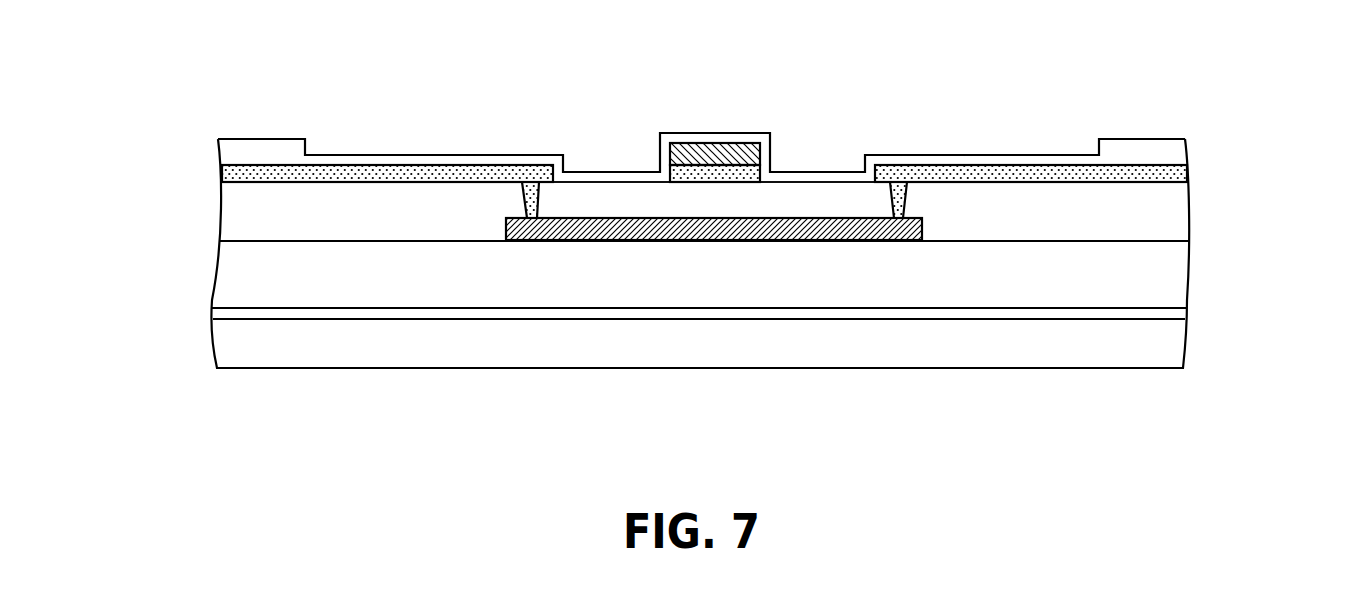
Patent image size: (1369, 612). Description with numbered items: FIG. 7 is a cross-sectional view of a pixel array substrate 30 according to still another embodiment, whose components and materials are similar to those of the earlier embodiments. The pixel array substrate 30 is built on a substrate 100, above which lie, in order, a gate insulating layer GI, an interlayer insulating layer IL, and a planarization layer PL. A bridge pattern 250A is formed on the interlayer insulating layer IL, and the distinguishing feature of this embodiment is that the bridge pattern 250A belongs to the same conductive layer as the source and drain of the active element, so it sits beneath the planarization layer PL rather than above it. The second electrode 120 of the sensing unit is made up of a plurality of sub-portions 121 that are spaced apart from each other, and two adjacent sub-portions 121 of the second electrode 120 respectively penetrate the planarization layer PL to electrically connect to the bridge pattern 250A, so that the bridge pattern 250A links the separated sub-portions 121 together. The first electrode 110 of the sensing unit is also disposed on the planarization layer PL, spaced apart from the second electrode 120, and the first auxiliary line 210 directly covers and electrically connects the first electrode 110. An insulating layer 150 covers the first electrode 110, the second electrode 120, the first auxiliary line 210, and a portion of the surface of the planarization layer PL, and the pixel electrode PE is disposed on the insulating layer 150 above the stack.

The substrate 100 is at (1172, 345).
The gate insulating layer GI is at (1172, 313).
The interlayer insulating layer IL is at (1170, 277).
The planarization layer PL is at (1180, 215).
The bridge pattern 250A is at (627, 232).
The second electrode 120 is at (1243, 188).
The sub-portion 121 is at (440, 173).
The insulating layer 150 is at (1178, 163).
The first electrode 110 is at (745, 175).
The first auxiliary line 210 is at (720, 152).
The pixel electrode PE is at (1177, 148).
The pixel array substrate 30 is at (1210, 468).